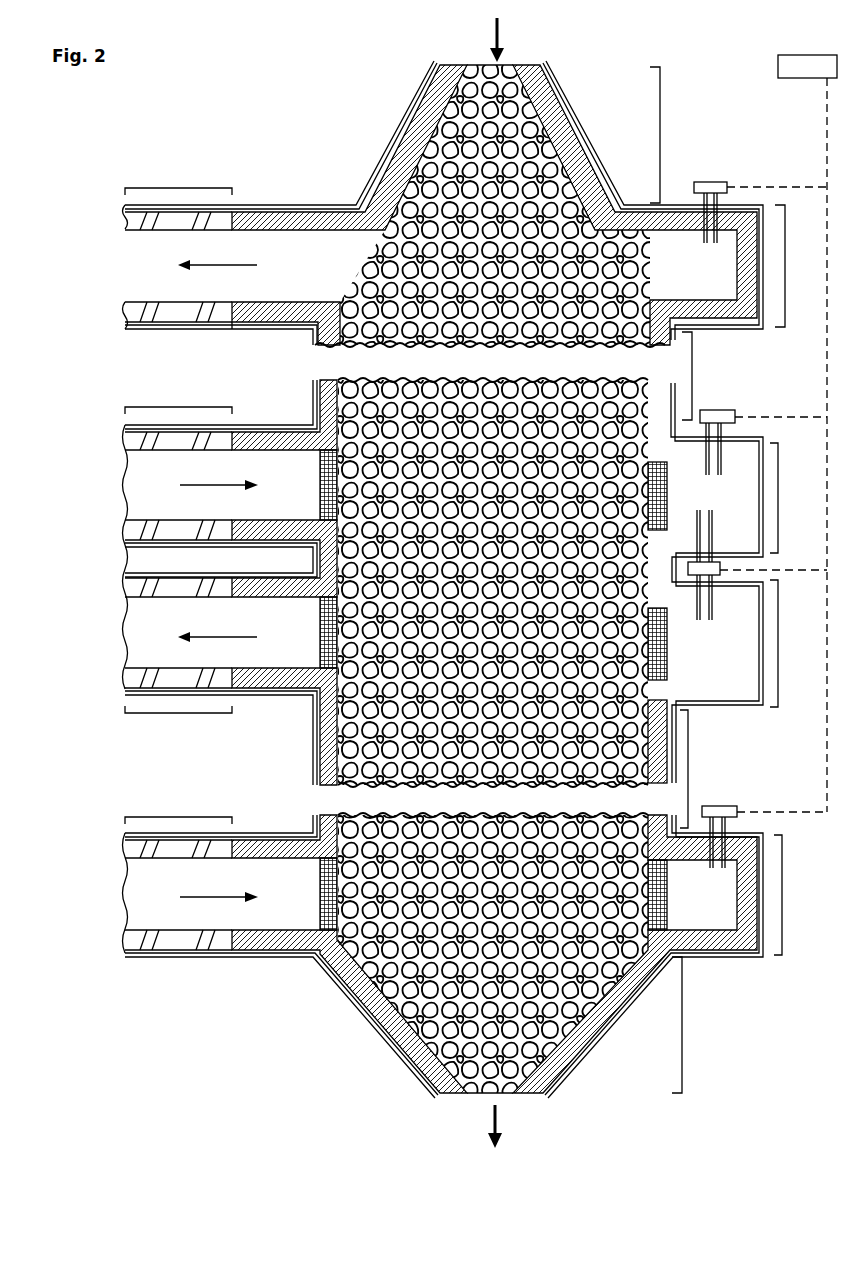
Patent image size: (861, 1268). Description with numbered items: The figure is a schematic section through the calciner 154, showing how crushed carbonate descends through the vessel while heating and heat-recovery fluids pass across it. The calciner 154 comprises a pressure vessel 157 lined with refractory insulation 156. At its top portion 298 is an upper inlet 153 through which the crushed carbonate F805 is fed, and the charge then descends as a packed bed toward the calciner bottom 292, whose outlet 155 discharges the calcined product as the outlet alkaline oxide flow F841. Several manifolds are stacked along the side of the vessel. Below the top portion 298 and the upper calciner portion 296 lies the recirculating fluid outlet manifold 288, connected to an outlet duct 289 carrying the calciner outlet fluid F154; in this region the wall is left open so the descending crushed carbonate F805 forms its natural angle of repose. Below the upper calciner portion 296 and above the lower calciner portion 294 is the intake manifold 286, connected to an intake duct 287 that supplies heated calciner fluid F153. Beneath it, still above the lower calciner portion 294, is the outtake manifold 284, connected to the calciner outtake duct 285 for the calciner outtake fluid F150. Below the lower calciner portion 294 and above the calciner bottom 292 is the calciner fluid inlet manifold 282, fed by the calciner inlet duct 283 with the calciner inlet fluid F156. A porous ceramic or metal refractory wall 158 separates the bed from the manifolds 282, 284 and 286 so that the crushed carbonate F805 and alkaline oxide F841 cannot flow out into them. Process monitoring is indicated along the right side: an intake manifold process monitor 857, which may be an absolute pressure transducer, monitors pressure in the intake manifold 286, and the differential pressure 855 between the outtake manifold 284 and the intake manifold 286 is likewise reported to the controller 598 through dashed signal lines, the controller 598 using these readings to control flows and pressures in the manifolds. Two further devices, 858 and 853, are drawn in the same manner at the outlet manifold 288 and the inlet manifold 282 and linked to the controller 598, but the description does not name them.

The upper inlet 153 is at (493, 59).
The calciner 154 is at (290, 140).
The outlet 155 is at (490, 1114).
The refractory insulation 156 is at (457, 67).
The pressure vessel 157 is at (569, 100).
The porous refractory wall 158 is at (320, 482).
The calciner fluid inlet manifold 282 is at (782, 915).
The calciner inlet duct 283 is at (220, 816).
The outtake manifold 284 is at (778, 675).
The calciner outtake duct 285 is at (220, 713).
The intake manifold 286 is at (778, 517).
The intake duct 287 is at (220, 406).
The recirculating fluid outlet manifold 288 is at (785, 272).
The outlet duct 289 is at (220, 187).
The calciner bottom 292 is at (682, 1010).
The lower calciner portion 294 is at (688, 792).
The upper calciner portion 296 is at (692, 390).
The top portion 298 is at (660, 152).
The controller 598 is at (780, 70).
The valve 853 is at (737, 812).
The differential pressure 855 is at (720, 568).
The intake manifold process monitor 857 is at (735, 418).
The valve 858 is at (743, 178).
The crushed carbonate F805 is at (500, 38).
The outlet alkaline oxide flow F841 is at (490, 1119).
The calciner outtake fluid F150 is at (232, 637).
The heated calciner fluid F153 is at (232, 485).
The calciner outlet fluid F154 is at (232, 265).
The calciner inlet fluid F156 is at (222, 897).